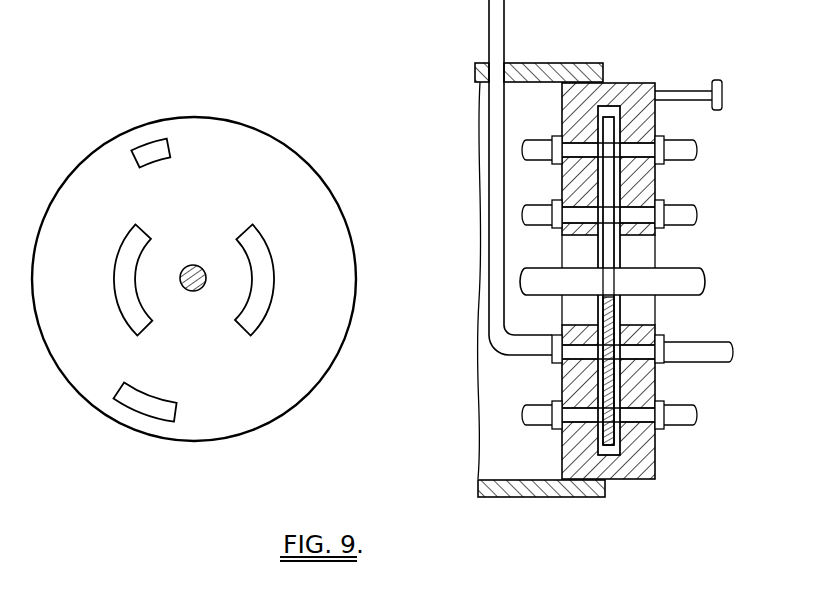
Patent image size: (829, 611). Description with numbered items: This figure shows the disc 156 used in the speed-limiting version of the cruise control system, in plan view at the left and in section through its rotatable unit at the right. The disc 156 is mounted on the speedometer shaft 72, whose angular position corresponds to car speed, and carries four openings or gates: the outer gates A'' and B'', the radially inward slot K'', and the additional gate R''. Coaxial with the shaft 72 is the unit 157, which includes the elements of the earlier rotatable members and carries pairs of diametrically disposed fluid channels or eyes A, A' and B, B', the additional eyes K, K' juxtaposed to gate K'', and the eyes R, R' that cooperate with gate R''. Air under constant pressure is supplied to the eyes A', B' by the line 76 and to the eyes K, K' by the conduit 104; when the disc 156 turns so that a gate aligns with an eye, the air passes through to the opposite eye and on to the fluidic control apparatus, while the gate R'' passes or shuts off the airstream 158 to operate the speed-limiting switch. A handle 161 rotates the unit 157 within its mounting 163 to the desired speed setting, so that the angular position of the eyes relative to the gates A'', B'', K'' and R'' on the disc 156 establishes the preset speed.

The disc 156 is at (271, 399).
The unit 157 is at (600, 88).
The handle 161 is at (690, 90).
The line 76 is at (678, 146).
The conduit 104 is at (687, 213).
The speedometer shaft 72 is at (190, 267).
The airstream 158 is at (710, 358).
The mounting 163 is at (548, 496).
The fluid channel or eye A' is at (588, 135).
The fluid channel or eye A is at (661, 172).
The fluidic eye K' is at (588, 201).
The fluidic eye K is at (661, 238).
The fluidic eye R' is at (591, 335).
The fluidic eye R is at (673, 365).
The gate R'' is at (463, 312).
The fluid channel or eye B' is at (588, 402).
The fluid channel or eye B is at (657, 440).
The gate A'' is at (167, 154).
The gate K'' is at (116, 279).
The gate B'' is at (148, 395).